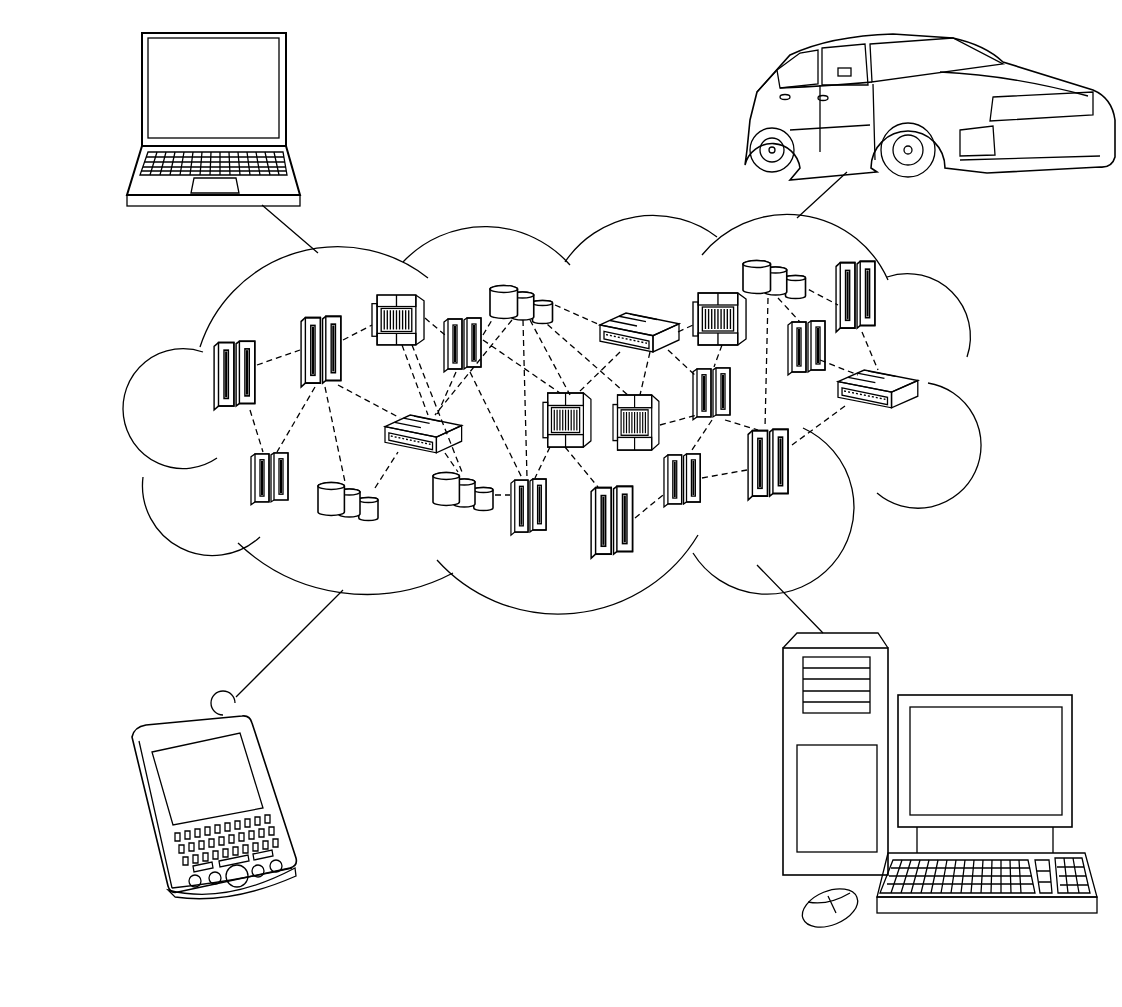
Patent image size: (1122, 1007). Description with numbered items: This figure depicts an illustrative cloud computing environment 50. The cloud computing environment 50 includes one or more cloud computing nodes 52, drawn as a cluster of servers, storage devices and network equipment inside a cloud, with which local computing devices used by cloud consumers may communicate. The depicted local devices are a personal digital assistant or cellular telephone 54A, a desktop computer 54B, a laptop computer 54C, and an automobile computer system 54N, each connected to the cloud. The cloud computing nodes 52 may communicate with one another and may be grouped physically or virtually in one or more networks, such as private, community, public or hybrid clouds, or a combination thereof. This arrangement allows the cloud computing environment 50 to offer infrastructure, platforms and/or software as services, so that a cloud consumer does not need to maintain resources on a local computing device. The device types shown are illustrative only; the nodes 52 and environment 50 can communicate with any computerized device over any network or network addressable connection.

The cloud computing environment 50 is at (985, 387).
The cloud computing nodes 52 is at (940, 428).
The personal digital assistant (PDA) or cellular telephone 54A is at (273, 792).
The desktop computer 54B is at (982, 695).
The laptop computer 54C is at (287, 98).
The automobile computer system 54N is at (750, 110).